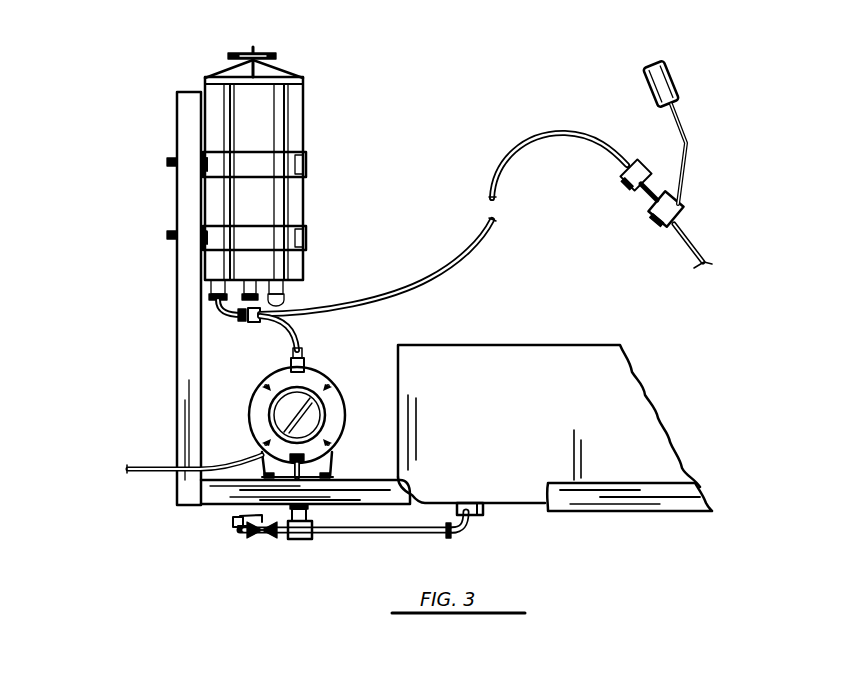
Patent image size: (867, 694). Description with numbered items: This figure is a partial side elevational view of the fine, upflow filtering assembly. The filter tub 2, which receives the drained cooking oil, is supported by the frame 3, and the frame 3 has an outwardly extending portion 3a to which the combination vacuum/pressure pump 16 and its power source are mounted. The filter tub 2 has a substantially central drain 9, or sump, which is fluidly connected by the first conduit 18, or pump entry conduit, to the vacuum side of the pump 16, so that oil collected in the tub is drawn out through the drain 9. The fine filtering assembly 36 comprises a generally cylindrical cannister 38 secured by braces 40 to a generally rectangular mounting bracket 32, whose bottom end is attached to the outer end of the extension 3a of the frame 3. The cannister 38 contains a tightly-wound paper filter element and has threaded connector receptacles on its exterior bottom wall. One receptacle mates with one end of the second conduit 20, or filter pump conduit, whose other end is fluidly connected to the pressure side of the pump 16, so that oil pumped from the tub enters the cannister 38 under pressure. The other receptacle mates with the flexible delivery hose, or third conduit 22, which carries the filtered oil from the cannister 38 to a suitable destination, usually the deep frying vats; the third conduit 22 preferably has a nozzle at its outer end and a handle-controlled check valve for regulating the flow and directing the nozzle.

The filter tub 2 is at (620, 427).
The frame 3 is at (653, 502).
The outwardly extending portion of frame 3a is at (215, 493).
The drain 9 is at (480, 514).
The combination vacuum/pressure pump 16 is at (265, 408).
The first conduit 18 is at (340, 537).
The second conduit 20 is at (268, 320).
The third conduit 22 is at (522, 157).
The mounting bracket 32 is at (177, 202).
The fine filtering assembly 36 is at (312, 120).
The cannister 38 is at (261, 97).
The braces 40 is at (303, 164).